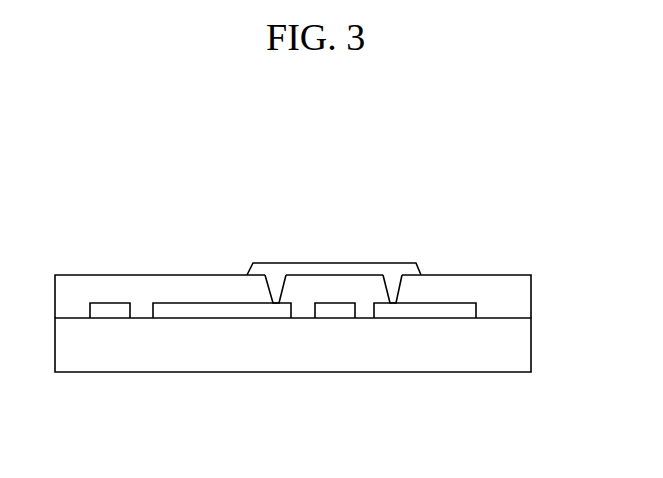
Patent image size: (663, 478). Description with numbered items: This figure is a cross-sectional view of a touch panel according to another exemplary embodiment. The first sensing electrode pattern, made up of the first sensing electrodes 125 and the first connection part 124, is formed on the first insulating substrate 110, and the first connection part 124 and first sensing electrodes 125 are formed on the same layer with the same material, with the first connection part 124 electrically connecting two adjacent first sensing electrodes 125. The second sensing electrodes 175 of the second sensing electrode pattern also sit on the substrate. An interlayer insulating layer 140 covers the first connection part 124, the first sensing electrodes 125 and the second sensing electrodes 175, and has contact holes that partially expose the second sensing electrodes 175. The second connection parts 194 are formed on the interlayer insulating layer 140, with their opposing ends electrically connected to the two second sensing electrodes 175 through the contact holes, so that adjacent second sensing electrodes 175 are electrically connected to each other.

The first insulating substrate 110 is at (512, 345).
The interlayer insulating layer 140 is at (512, 296).
The first connection part 124 is at (338, 310).
The first sensing electrodes 125 is at (111, 310).
The second sensing electrodes 175 is at (216, 310).
The second connection parts 194 is at (373, 270).